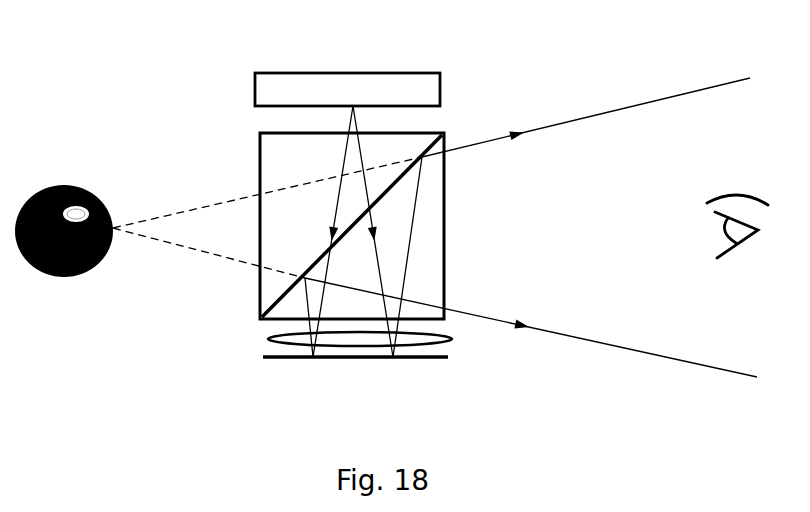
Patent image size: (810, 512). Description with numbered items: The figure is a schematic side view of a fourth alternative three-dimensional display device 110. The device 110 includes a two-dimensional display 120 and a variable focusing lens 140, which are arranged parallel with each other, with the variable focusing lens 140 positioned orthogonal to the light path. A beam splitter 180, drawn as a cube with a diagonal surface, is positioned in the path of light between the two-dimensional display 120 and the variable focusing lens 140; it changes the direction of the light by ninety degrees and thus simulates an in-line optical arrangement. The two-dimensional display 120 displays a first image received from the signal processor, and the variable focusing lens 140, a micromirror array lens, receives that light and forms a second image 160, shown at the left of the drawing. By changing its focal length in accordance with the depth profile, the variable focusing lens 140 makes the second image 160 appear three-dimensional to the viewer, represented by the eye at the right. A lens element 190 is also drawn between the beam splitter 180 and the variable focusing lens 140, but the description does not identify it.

The 3D display device 110 is at (151, 107).
The two-dimensional display 120 is at (431, 70).
The variable focusing lens 140 is at (435, 363).
The second image 160 is at (53, 284).
The beam splitter 180 is at (447, 223).
The lens 190 is at (268, 337).